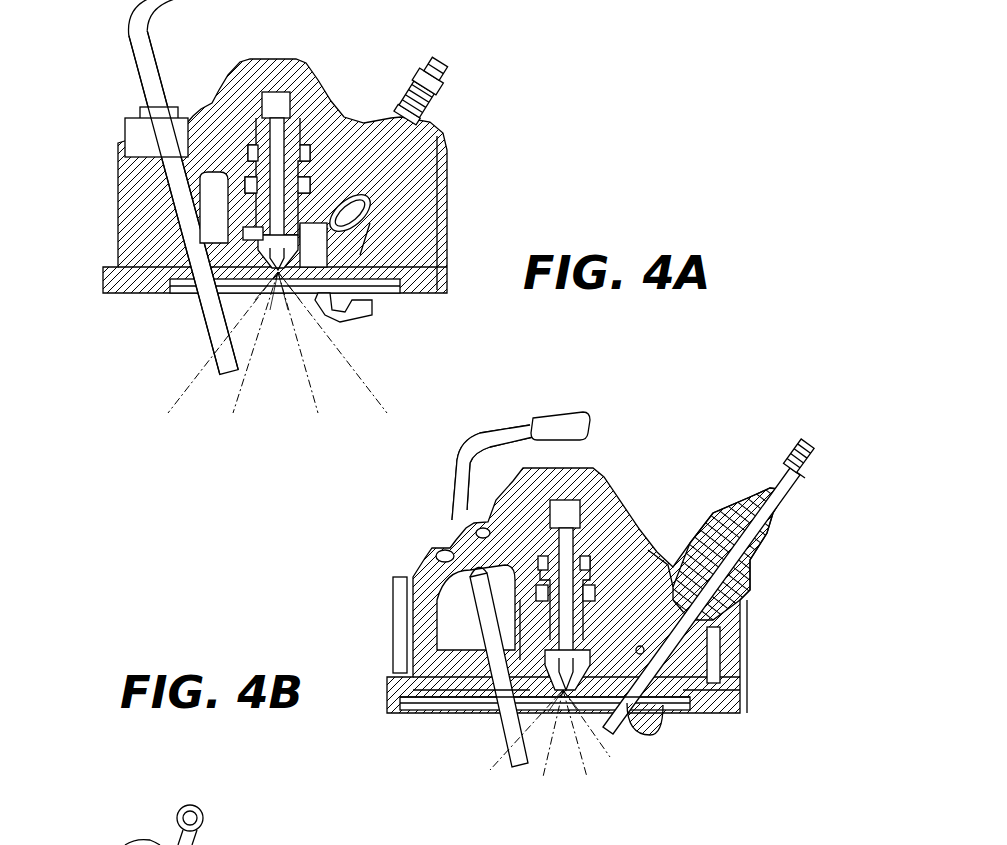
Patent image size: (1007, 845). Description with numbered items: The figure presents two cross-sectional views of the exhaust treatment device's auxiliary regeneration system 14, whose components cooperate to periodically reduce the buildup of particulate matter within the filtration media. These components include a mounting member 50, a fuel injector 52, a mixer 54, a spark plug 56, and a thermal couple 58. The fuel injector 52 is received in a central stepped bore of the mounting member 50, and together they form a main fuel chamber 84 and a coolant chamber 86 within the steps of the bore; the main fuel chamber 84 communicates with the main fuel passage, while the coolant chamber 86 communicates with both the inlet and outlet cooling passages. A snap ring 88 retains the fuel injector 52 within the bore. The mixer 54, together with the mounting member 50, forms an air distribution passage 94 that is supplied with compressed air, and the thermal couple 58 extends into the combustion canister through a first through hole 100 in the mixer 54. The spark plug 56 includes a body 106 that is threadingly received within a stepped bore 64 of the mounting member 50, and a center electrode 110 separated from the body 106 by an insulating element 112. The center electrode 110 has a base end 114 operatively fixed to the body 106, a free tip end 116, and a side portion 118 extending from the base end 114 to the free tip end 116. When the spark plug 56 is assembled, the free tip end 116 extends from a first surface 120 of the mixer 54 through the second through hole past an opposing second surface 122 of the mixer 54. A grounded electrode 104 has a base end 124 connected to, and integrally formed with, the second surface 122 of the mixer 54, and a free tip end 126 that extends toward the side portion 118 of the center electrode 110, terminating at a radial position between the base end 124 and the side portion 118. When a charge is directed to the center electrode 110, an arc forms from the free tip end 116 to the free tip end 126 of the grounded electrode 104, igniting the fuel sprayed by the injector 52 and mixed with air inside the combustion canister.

In FIG. 4A, the auxiliary regeneration system 14 is at (484, 38).
In FIG. 4B, the auxiliary regeneration system 14 is at (819, 440).
In FIG. 4A, the mounting member 50 is at (433, 246).
In FIG. 4A, the fuel injector 52 is at (300, 135).
In FIG. 4B, the fuel injector 52 is at (600, 547).
In FIG. 4A, the mixer 54 is at (352, 267).
In FIG. 4B, the mixer 54 is at (463, 687).
In FIG. 4A, the spark plug 56 is at (432, 103).
In FIG. 4B, the spark plug 56 is at (768, 597).
In FIG. 4A, the thermal couple 58 is at (135, 32).
In FIG. 4B, the thermal couple 58 is at (458, 495).
In FIG. 4B, the stepped bore 64 is at (660, 717).
In FIG. 4A, the main fuel chamber 84 is at (280, 100).
In FIG. 4A, the coolant chamber 86 is at (252, 148).
In FIG. 4A, the snap ring 88 is at (305, 180).
In FIG. 4A, the air distribution passage 94 is at (390, 262).
In FIG. 4B, the air distribution passage 94 is at (395, 665).
In FIG. 4A, the first through hole 100 is at (205, 277).
In FIG. 4B, the grounded electrode 104 is at (653, 723).
In FIG. 4B, the body 106 is at (747, 585).
In FIG. 4B, the center electrode 110 is at (733, 543).
In FIG. 4B, the insulating element 112 is at (750, 490).
In FIG. 4B, the base end 114 is at (790, 485).
In FIG. 4B, the free tip end 116 is at (595, 740).
In FIG. 4B, the side portion 118 is at (650, 577).
In FIG. 4B, the first surface 120 is at (470, 677).
In FIG. 4B, the second surface 122 is at (490, 690).
In FIG. 4B, the base end 124 is at (700, 690).
In FIG. 4B, the free tip end 126 is at (620, 705).